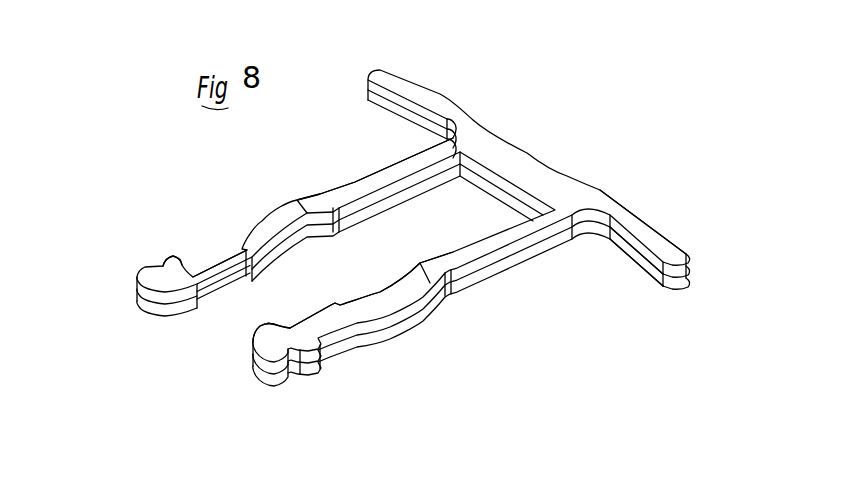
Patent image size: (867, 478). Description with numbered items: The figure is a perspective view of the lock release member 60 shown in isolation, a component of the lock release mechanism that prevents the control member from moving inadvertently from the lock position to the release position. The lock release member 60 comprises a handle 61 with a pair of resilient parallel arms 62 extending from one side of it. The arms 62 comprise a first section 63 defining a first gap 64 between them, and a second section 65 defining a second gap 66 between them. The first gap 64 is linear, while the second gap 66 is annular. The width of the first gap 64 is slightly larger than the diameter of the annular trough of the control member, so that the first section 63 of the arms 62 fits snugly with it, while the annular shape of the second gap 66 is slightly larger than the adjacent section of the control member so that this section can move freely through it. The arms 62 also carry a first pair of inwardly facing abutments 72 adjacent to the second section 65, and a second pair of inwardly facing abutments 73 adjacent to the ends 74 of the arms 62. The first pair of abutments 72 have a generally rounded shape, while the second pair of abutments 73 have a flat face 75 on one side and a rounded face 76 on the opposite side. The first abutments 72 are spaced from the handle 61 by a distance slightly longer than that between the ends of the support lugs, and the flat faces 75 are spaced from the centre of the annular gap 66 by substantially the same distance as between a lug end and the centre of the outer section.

The lock release member 60 is at (278, 156).
The handle 61 is at (535, 160).
The resilient parallel arms 62 is at (505, 268).
The first section 63 is at (357, 183).
The first gap 64 is at (446, 229).
The second section 65 is at (255, 213).
The second gap 66 is at (345, 280).
The first pair of inwardly facing abutments 72 is at (240, 246).
The second pair of inwardly facing abutments 73 is at (167, 266).
The ends of the arms 74 is at (135, 298).
The flat face 75 is at (274, 326).
The rounded face 76 is at (254, 341).